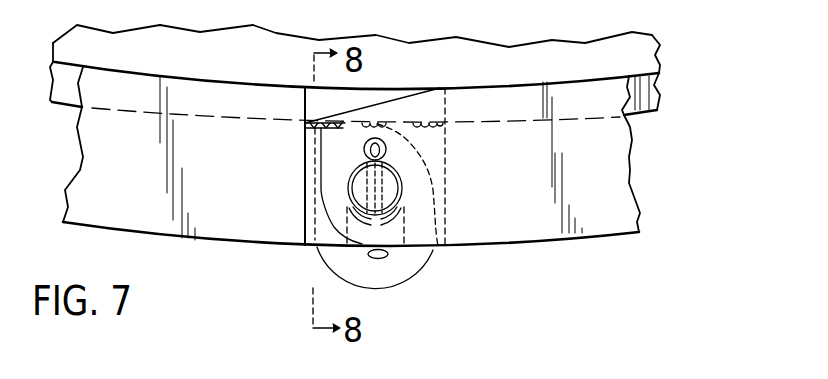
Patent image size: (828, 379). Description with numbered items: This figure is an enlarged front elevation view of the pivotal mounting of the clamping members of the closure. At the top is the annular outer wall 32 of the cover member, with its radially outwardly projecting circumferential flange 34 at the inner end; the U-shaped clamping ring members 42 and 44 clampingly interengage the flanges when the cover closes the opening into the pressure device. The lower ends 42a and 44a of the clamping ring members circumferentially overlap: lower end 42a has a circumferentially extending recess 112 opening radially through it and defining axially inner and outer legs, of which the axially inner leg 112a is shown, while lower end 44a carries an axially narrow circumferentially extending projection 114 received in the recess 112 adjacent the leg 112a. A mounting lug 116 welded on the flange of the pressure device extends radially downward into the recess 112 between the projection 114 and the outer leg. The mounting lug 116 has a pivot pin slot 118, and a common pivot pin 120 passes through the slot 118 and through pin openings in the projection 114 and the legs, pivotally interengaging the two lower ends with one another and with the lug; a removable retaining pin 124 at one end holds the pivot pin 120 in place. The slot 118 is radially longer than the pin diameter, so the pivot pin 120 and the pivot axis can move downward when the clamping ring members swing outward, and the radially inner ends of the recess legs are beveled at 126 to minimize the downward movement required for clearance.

The annular outer wall 32 is at (644, 53).
The circumferential flange 34 is at (662, 92).
The clamping ring member 42 is at (620, 153).
The lower end of clamping ring member 42a is at (506, 232).
The clamping ring member 44 is at (92, 178).
The lower end of clamping ring member 44a is at (264, 229).
The recess 112 is at (438, 256).
The axially inner leg 112a is at (400, 236).
The projection 114 is at (330, 238).
The mounting lug 116 is at (403, 272).
The pivot pin slot 118 is at (385, 258).
The pivot pin 120 is at (391, 187).
The retaining pin 124 is at (386, 153).
The bevel 126 is at (397, 107).